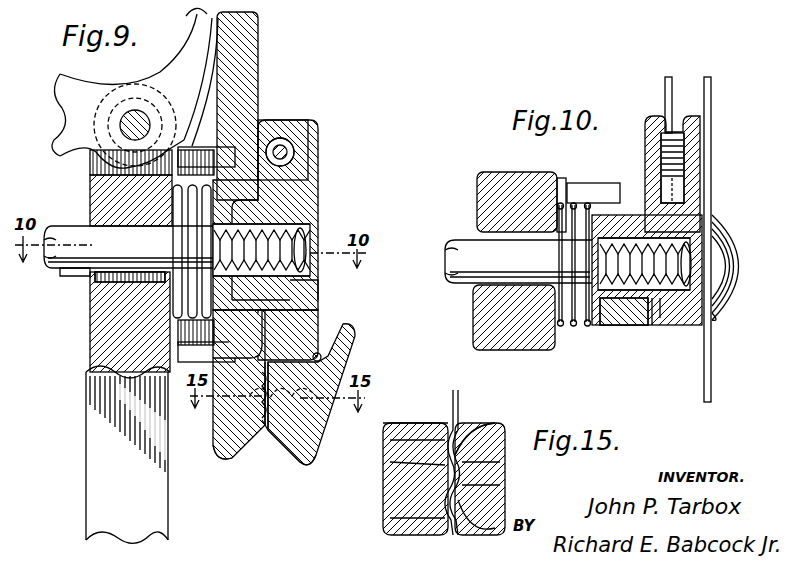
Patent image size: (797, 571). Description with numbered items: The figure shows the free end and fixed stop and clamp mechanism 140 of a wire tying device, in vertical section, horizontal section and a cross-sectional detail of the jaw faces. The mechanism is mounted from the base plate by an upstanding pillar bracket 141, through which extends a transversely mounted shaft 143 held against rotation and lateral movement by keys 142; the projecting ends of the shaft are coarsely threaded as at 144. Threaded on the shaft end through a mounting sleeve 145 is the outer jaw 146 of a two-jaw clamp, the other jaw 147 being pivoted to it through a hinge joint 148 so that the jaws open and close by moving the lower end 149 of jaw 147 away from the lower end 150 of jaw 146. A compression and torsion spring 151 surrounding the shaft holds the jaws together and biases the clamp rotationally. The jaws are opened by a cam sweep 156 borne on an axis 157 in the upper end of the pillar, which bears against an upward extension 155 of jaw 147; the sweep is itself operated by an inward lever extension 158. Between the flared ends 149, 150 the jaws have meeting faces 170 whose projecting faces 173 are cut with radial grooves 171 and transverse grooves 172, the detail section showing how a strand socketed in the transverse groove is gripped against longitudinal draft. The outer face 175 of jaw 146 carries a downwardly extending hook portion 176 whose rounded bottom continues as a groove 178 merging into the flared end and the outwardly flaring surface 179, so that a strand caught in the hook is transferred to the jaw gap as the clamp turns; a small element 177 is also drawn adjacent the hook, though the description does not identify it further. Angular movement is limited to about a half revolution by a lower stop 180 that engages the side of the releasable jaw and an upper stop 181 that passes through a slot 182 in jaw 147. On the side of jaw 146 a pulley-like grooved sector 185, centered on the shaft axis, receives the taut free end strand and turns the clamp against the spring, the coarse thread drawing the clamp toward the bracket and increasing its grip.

In FIG. 9, the free end and fixed stop and clamp mechanism 140 is at (318, 183).
In FIG. 10, the free end and fixed stop and clamp mechanism 140 is at (700, 165).
In FIG. 9, the pillar bracket 141 is at (88, 408).
In FIG. 10, the pillar bracket 141 is at (490, 174).
In FIG. 9, the keys 142 is at (92, 298).
In FIG. 9, the shaft 143 is at (62, 270).
In FIG. 10, the shaft 143 is at (470, 240).
In FIG. 9, the coarse thread 144 is at (310, 222).
In FIG. 10, the coarse thread 144 is at (636, 322).
In FIG. 9, the mounting sleeve 145 is at (278, 280).
In FIG. 10, the mounting sleeve 145 is at (662, 326).
In FIG. 9, the outer jaw 146 is at (300, 322).
In FIG. 10, the outer jaw 146 is at (712, 210).
In FIG. 15, the outer jaw 146 is at (488, 536).
In FIG. 9, the releasable jaw 147 is at (214, 413).
In FIG. 10, the releasable jaw 147 is at (612, 326).
In FIG. 15, the releasable jaw 147 is at (395, 485).
In FIG. 9, the hinge joint 148 is at (288, 135).
In FIG. 9, the lower end of jaw 147 149 is at (226, 462).
In FIG. 15, the lower end of jaw 147 149 is at (426, 536).
In FIG. 9, the lower end of jaw 146 150 is at (310, 466).
In FIG. 15, the lower end of jaw 146 150 is at (480, 425).
In FIG. 9, the compression and torsion spring 151 is at (175, 212).
In FIG. 10, the compression and torsion spring 151 is at (574, 328).
In FIG. 9, the upward extension 155 is at (256, 45).
In FIG. 9, the cam sweep 156 is at (188, 14).
In FIG. 9, the axis 157 is at (130, 110).
In FIG. 9, the lever extension 158 is at (60, 94).
In FIG. 9, the meeting faces 170 is at (268, 432).
In FIG. 15, the radial grooves 171 is at (420, 450).
In FIG. 9, the transverse grooves 172 is at (345, 370).
In FIG. 15, the transverse grooves 172 is at (420, 467).
In FIG. 9, the projecting faces 173 is at (285, 352).
In FIG. 15, the projecting faces 173 is at (440, 490).
In FIG. 9, the outer face 175 is at (300, 292).
In FIG. 9, the hook portion 176 is at (356, 336).
In FIG. 10, the hook portion 176 is at (748, 258).
In FIG. 9, the pivot pin 177 is at (340, 354).
In FIG. 10, the groove 178 is at (722, 314).
In FIG. 9, the flaring surface 179 is at (290, 450).
In FIG. 9, the lower stop 180 is at (206, 362).
In FIG. 10, the lower stop 180 is at (590, 184).
In FIG. 9, the upper stop 181 is at (198, 150).
In FIG. 9, the slot 182 is at (240, 100).
In FIG. 10, the sector 185 is at (658, 117).